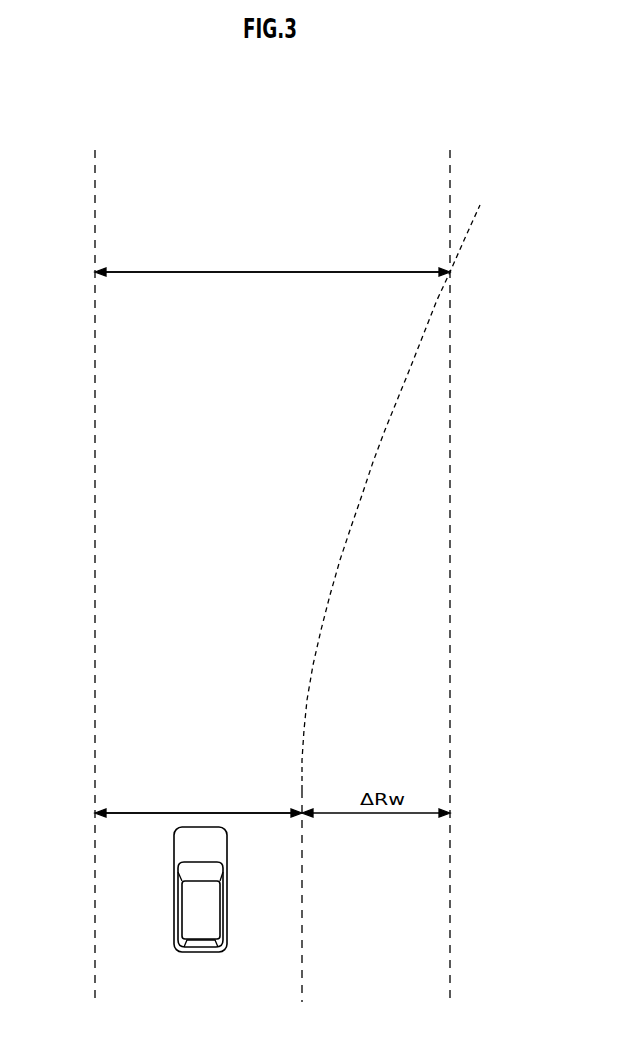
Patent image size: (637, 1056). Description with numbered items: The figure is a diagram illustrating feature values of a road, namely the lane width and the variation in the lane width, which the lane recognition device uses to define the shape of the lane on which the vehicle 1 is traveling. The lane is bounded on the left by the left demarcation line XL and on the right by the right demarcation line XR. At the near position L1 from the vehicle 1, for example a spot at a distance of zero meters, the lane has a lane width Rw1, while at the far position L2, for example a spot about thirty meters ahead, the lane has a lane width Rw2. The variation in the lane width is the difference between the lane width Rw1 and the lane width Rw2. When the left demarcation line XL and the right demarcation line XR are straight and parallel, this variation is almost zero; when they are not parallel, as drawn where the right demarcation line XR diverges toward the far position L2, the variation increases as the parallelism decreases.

The vehicle 1 is at (192, 908).
The left demarcation line XL is at (89, 594).
The right demarcation line XR is at (382, 622).
The near position L1 is at (254, 815).
The far position L2 is at (255, 273).
The lane width in the near position Rw1 is at (198, 801).
The lane width in the far position Rw2 is at (272, 260).